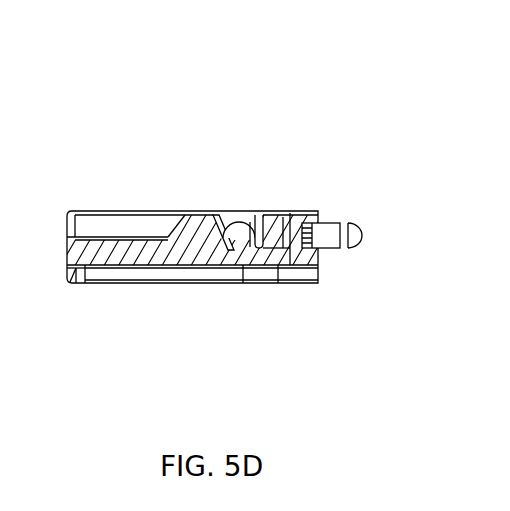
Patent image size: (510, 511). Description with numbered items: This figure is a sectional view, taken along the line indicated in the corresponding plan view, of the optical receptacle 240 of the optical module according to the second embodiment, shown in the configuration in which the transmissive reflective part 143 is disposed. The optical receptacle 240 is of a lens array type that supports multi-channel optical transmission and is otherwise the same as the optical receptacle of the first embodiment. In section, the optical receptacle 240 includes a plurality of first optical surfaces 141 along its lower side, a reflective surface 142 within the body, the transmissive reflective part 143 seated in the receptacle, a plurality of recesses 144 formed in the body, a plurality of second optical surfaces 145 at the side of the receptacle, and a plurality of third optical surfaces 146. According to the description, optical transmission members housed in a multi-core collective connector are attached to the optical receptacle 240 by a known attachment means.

The optical receptacle 240 is at (334, 85).
The first optical surface 141 is at (245, 282).
The reflective surface 142 is at (222, 199).
The transmissive reflective part 143 is at (290, 213).
The recess 144 is at (257, 213).
The second optical surface 145 is at (322, 247).
The third optical surface 146 is at (278, 280).